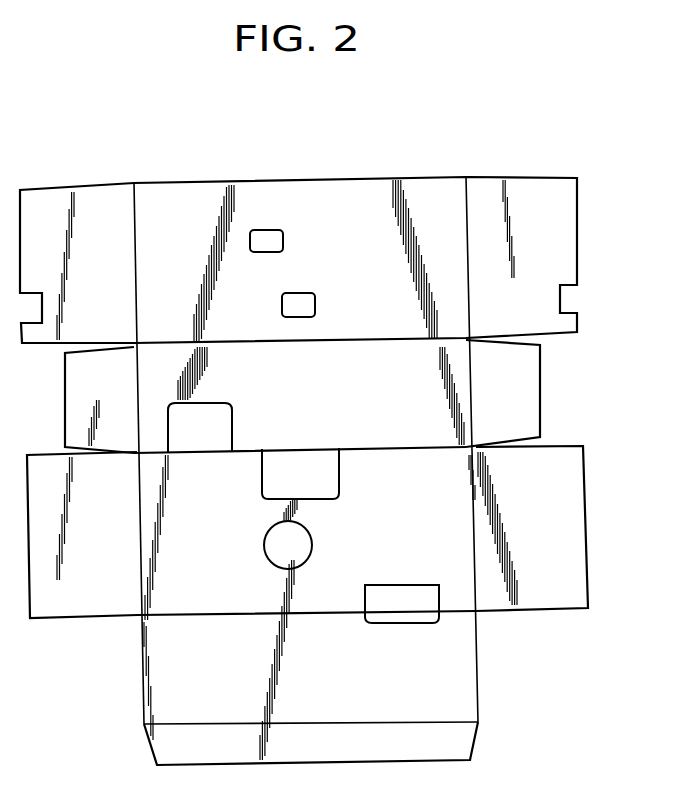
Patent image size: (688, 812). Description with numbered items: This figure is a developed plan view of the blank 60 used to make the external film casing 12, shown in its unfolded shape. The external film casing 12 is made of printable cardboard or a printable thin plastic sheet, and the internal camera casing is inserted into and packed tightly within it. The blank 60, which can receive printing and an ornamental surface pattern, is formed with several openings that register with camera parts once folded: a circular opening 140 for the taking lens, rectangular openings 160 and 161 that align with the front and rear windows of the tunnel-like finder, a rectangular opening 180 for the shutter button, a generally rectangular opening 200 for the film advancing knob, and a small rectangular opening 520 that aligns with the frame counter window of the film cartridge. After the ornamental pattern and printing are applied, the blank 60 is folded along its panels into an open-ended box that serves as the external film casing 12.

The external film casing 12 is at (223, 170).
The blank 60 is at (362, 188).
The small rectangular opening 520 is at (283, 240).
The rectangular opening 161 is at (315, 305).
The rectangular opening 180 is at (232, 428).
The rectangular opening 160 is at (339, 478).
The circular opening 140 is at (312, 545).
The generally rectangular opening 200 is at (370, 624).